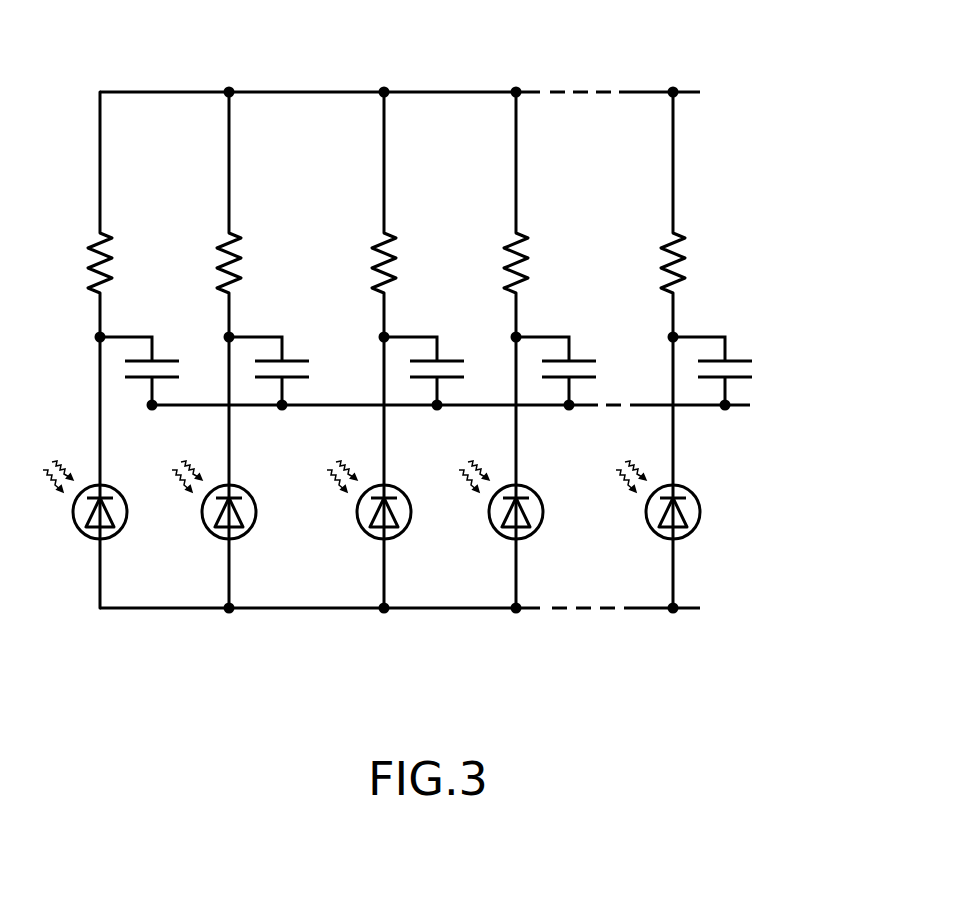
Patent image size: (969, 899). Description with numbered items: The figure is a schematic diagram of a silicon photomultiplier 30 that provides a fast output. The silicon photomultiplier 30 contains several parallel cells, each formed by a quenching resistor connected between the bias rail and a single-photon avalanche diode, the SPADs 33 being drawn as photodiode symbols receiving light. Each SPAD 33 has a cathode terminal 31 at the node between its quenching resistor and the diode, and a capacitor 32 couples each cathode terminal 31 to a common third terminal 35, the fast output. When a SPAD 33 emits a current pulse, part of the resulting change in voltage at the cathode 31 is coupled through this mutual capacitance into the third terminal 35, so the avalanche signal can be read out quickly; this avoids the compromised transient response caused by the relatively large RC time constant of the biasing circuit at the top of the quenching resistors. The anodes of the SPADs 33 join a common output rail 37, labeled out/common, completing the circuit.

The silicon photomultiplier 30 is at (712, 48).
The cathode terminal 31 is at (100, 483).
The capacitor 32 is at (293, 360).
The SPAD 33 is at (397, 518).
The third terminal 35 is at (743, 404).
The common output terminal 37 is at (690, 612).